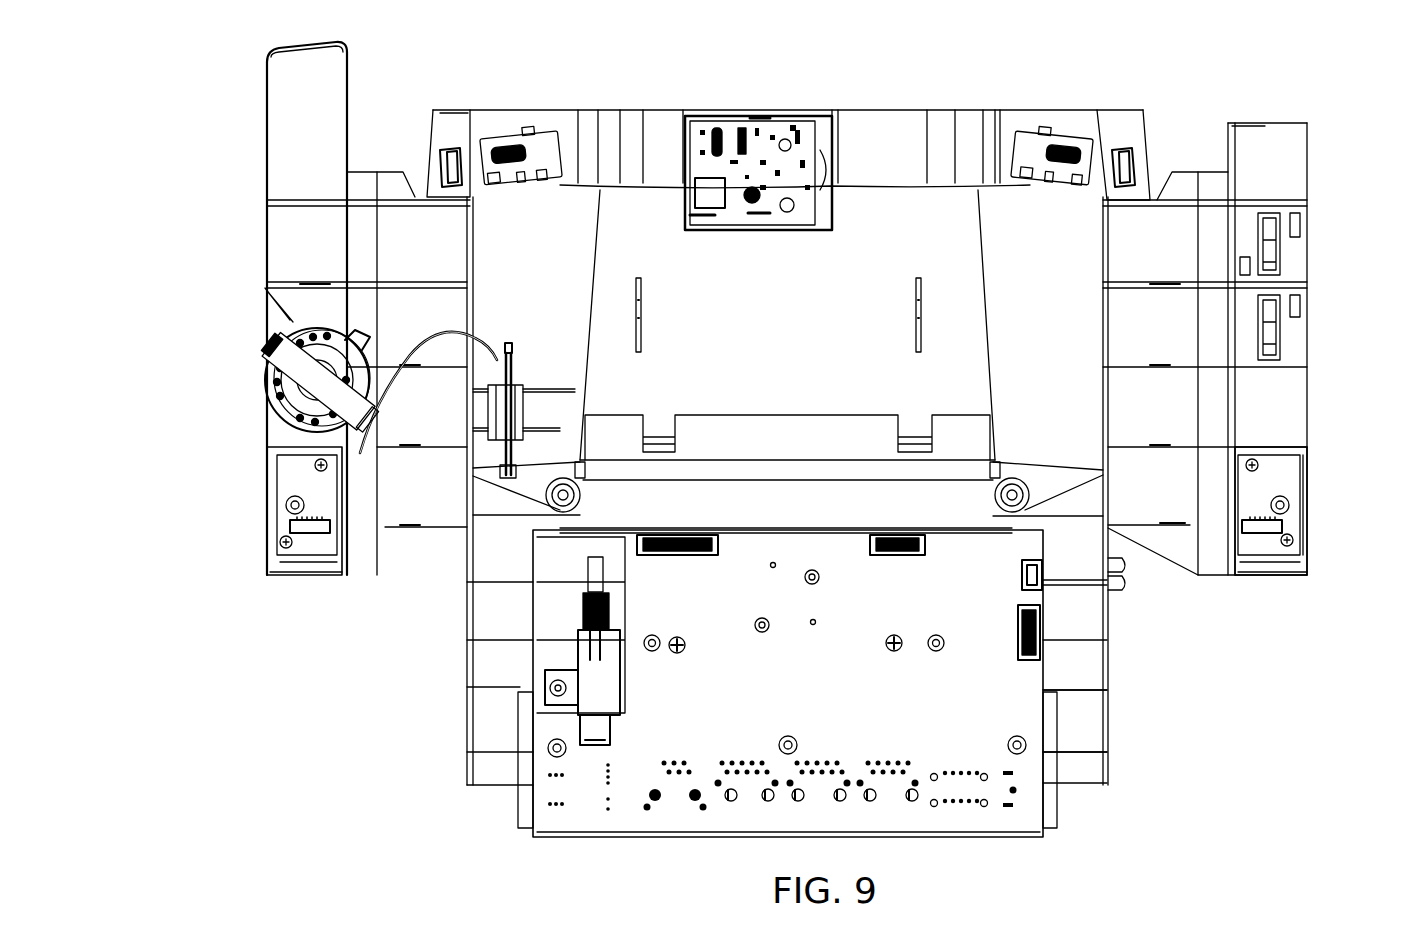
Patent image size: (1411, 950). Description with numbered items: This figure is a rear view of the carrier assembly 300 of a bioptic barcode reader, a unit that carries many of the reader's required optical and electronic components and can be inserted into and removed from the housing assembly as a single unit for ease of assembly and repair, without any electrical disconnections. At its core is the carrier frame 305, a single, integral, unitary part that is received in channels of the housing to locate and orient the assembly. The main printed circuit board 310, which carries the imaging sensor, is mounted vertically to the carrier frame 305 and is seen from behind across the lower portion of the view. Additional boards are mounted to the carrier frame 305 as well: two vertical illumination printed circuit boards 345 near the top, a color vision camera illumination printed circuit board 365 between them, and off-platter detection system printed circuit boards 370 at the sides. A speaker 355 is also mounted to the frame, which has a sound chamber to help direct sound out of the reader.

The carrier assembly 300 is at (148, 42).
The carrier frame 305 is at (1107, 683).
The main printed circuit board 310 is at (915, 815).
The vertical illumination printed circuit board 345 is at (535, 132).
The speaker 355 is at (263, 376).
The color vision camera illumination printed circuit board 365 is at (733, 135).
The off-platter detection system printed circuit board 370 is at (295, 490).